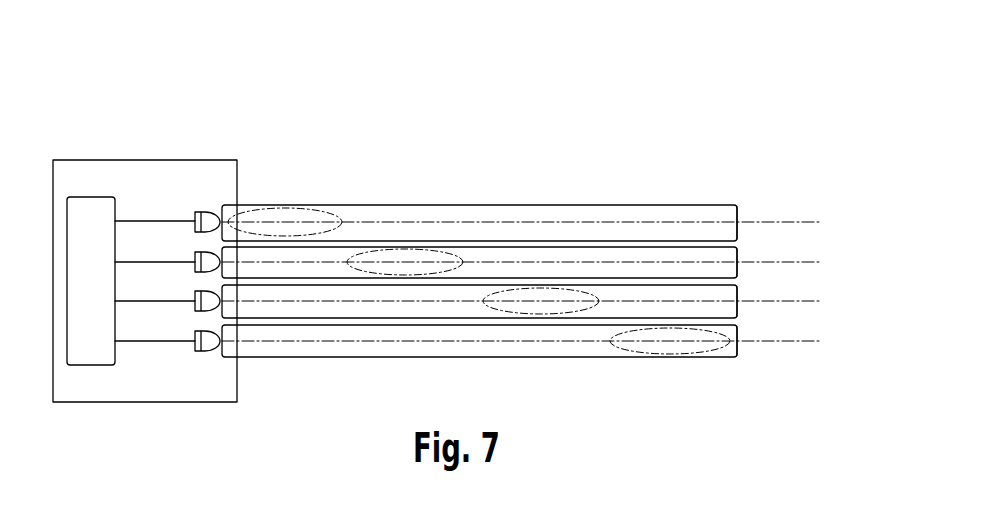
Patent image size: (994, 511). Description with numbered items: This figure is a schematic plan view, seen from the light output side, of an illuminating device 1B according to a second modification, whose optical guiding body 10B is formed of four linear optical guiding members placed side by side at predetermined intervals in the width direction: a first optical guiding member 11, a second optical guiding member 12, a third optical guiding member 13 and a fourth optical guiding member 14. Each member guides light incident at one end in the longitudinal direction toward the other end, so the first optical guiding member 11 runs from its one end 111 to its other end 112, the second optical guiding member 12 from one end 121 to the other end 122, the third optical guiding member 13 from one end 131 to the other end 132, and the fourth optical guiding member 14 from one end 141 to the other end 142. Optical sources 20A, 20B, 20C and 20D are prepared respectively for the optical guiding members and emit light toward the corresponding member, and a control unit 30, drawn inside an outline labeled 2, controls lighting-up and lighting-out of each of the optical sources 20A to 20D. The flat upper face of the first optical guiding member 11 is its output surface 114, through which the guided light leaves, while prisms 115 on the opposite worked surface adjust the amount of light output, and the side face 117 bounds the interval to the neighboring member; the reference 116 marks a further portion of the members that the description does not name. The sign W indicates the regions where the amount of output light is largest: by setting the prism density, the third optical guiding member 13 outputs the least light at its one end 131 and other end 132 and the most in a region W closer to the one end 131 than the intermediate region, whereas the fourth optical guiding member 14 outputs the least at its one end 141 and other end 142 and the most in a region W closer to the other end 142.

The illuminating device 1B is at (745, 101).
The housing 2 is at (73, 403).
The control unit 30 is at (86, 197).
The optical guiding body 10B is at (500, 125).
The first optical guiding member 11 is at (297, 206).
The second optical guiding member 12 is at (470, 324).
The third optical guiding member 13 is at (348, 240).
The fourth optical guiding member 14 is at (410, 283).
The optical source 20A is at (200, 211).
The optical source 20B is at (226, 351).
The optical source 20C is at (222, 251).
The optical source 20D is at (223, 303).
The one end of first optical guiding member 111 is at (216, 236).
The one end of second optical guiding member 121 is at (216, 355).
The one end of third optical guiding member 131 is at (216, 277).
The one end of fourth optical guiding member 141 is at (216, 316).
The other end of first optical guiding member 112 is at (738, 214).
The other end of second optical guiding member 122 is at (738, 334).
The other end of third optical guiding member 132 is at (738, 254).
The other end of fourth optical guiding member 142 is at (738, 294).
The output surface 114 is at (533, 212).
The prism 115 is at (595, 257).
The optical axis of fourth light guide 116 is at (632, 292).
The side face 117 is at (687, 335).
The region of largest light output W is at (238, 207).